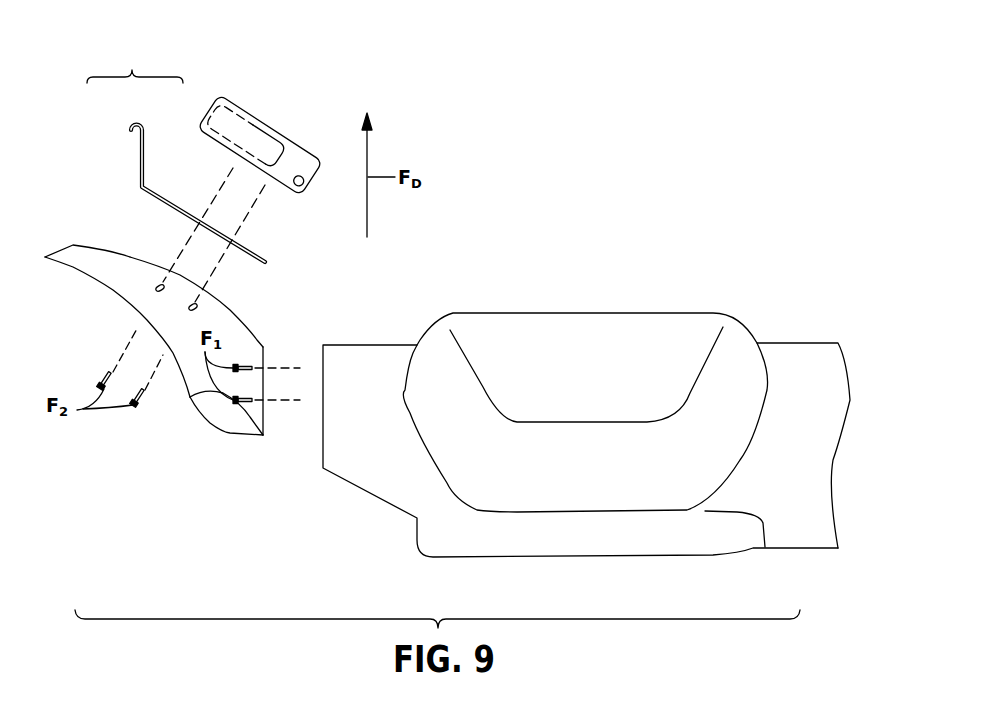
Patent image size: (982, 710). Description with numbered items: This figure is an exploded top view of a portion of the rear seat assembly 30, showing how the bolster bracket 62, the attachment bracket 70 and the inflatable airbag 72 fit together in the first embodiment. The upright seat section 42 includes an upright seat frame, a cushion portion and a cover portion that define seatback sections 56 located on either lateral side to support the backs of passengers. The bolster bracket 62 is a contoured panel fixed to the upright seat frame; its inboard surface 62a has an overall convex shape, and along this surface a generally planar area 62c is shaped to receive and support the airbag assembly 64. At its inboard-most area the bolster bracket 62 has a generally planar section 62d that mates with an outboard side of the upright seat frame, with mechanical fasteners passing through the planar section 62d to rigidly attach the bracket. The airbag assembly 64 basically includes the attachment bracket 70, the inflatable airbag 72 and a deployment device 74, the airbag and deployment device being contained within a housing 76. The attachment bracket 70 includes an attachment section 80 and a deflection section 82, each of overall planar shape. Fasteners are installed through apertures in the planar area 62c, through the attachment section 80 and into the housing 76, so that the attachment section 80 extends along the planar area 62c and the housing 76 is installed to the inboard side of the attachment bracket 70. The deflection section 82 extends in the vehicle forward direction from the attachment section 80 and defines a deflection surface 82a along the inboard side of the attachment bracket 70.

The seat assembly 30 is at (610, 203).
The upright seat section 42 is at (633, 345).
The seatback section 56 is at (363, 370).
The bolster bracket 62 is at (87, 277).
The inboard surface 62a is at (243, 317).
The planar area 62c is at (182, 290).
The planar section 62d is at (265, 382).
The airbag assembly 64 is at (135, 65).
The attachment bracket 70 is at (137, 148).
The inflatable airbag 72 is at (266, 130).
The deployment device 74 is at (303, 181).
The housing 76 is at (230, 95).
The attachment section 80 is at (197, 213).
The deflection section 82 is at (138, 177).
The deflection surface 82a is at (152, 156).